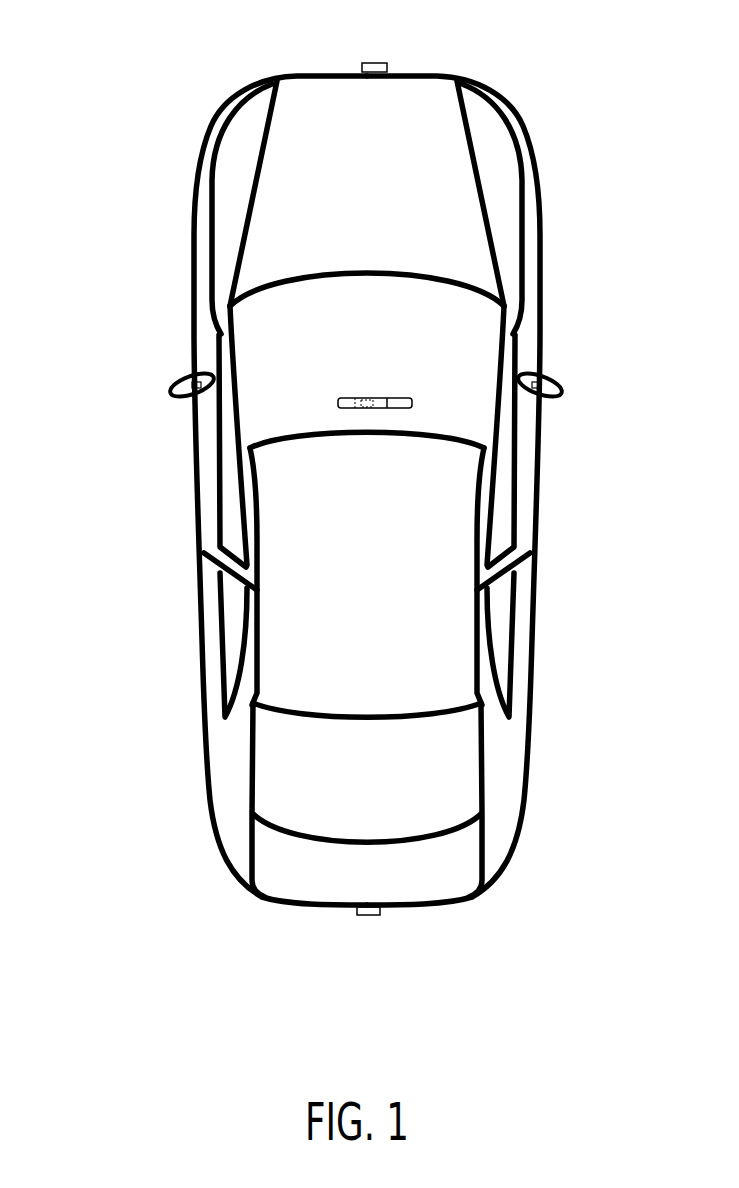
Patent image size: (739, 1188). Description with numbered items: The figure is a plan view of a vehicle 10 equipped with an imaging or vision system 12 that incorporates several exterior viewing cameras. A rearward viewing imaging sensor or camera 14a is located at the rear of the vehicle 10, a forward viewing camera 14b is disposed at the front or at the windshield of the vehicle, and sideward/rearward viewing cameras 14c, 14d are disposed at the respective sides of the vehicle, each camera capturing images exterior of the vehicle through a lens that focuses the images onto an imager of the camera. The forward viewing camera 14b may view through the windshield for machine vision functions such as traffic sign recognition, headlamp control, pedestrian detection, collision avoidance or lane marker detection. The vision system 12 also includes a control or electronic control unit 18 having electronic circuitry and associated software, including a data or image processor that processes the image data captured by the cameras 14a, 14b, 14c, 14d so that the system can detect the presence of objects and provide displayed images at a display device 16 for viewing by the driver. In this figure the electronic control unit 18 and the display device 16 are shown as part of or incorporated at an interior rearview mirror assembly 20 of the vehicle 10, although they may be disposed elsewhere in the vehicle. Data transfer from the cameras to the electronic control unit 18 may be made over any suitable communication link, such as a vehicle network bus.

The vehicle 10 is at (135, 88).
The vision system 12 is at (328, 923).
The rearward viewing camera 14a is at (380, 915).
The forward viewing camera 14b is at (377, 62).
The sideward/rearward viewing camera 14c is at (183, 375).
The sideward/rearward viewing camera 14d is at (552, 380).
The display device 16 is at (352, 398).
The electronic control unit 18 is at (372, 398).
The interior rearview mirror assembly 20 is at (412, 398).